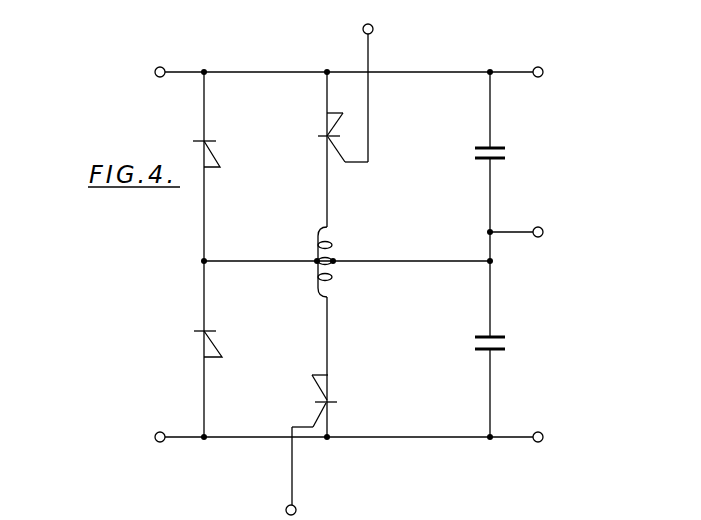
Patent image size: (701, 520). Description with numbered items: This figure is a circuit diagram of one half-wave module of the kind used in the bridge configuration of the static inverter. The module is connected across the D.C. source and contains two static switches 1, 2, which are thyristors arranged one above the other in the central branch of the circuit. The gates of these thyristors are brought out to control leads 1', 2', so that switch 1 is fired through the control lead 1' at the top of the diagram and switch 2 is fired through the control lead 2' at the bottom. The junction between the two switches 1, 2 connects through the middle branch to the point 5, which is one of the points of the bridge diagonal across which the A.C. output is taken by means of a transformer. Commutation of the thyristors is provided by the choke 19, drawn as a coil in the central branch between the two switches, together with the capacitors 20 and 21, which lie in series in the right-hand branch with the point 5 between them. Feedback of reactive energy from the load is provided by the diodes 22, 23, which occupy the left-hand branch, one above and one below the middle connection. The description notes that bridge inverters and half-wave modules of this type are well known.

The switch 1 is at (319, 130).
The control lead 1' is at (375, 91).
The switch 2 is at (320, 400).
The control lead 2' is at (304, 471).
The point 5 is at (543, 232).
The choke 19 is at (331, 244).
The capacitor 20 is at (499, 146).
The capacitor 21 is at (499, 335).
The diode 22 is at (216, 149).
The diode 23 is at (214, 341).